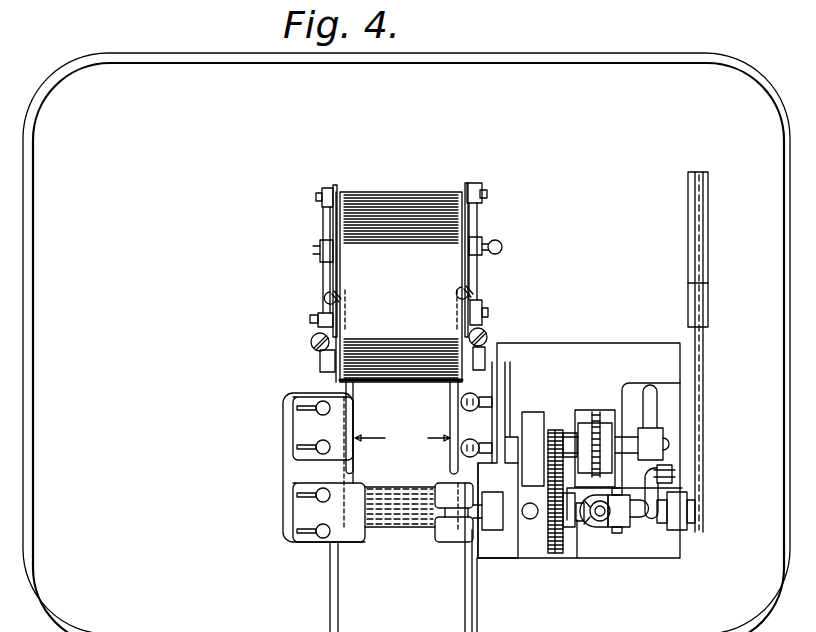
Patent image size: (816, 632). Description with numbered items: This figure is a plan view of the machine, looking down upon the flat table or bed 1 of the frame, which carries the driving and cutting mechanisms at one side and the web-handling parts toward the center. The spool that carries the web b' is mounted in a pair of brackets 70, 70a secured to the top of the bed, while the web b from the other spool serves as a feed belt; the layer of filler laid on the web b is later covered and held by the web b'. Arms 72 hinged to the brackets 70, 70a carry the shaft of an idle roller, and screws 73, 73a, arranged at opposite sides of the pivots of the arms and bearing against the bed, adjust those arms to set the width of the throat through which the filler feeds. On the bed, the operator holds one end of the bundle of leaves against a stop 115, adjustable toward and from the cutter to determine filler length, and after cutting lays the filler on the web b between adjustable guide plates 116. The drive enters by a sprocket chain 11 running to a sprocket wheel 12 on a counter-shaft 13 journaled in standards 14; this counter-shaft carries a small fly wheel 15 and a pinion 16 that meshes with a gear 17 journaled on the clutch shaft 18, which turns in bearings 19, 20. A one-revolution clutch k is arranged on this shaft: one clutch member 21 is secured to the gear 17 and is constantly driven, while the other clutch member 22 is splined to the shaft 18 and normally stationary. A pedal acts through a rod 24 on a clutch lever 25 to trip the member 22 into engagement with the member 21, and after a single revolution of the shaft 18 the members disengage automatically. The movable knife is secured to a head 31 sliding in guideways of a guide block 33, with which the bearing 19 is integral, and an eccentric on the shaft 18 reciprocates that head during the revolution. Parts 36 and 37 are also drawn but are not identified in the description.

The flat table or bed 1 is at (623, 75).
The web b' is at (399, 287).
The web b is at (311, 467).
The bracket 70 is at (478, 228).
The bracket 70a is at (322, 267).
The screw 73 is at (338, 292).
The screw 73a is at (500, 307).
The arm 72 is at (330, 362).
The adjustable guide plate 116 is at (402, 438).
The stop 115 is at (355, 530).
The head 31 is at (490, 528).
The guide block 33 is at (503, 560).
The one-revolution clutch k is at (573, 487).
The standard 14 is at (505, 385).
The fly wheel 15 is at (535, 430).
The pinion 16 is at (557, 430).
The gear 17 is at (555, 556).
The bearing 19 is at (530, 522).
The sprocket chain 11 is at (602, 420).
The sprocket wheel 12 is at (592, 412).
The counter-shaft 13 is at (668, 444).
The rod 24 is at (672, 473).
The clutch lever 25 is at (707, 480).
The clutch member 22 is at (585, 523).
The clutch member 21 is at (577, 530).
The clutch shaft 18 is at (582, 528).
The bearing 20 is at (657, 518).
The stop 36 is at (695, 520).
The bar 37 is at (690, 215).